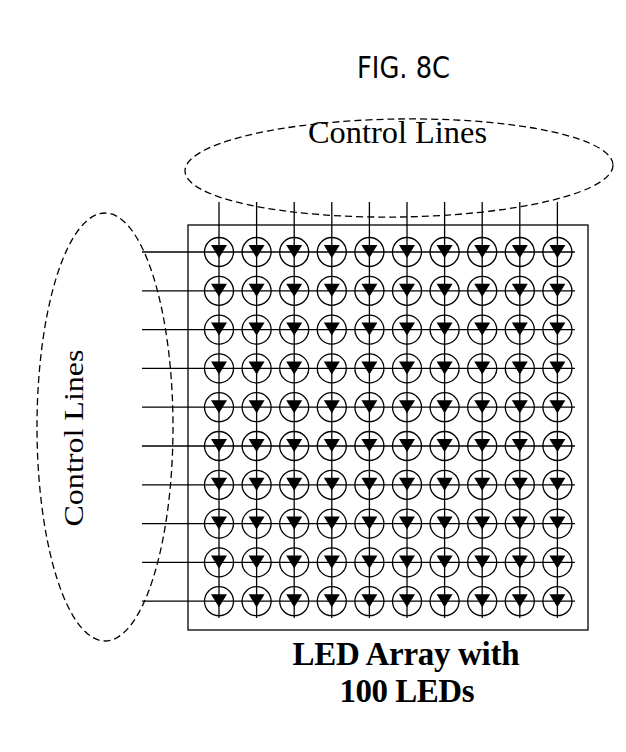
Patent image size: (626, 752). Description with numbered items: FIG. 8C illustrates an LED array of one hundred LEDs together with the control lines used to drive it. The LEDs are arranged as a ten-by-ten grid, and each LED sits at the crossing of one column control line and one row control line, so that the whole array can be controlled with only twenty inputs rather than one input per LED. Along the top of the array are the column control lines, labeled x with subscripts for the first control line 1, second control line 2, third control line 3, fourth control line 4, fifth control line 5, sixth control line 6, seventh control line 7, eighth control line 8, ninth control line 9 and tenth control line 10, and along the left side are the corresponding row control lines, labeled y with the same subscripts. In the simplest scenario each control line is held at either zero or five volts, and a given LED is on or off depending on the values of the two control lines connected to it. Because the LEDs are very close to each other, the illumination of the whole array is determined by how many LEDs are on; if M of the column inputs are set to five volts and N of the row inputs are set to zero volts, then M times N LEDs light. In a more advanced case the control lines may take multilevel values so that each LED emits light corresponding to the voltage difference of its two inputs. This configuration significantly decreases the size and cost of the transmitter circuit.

The control line x1 / y1 1 is at (344, 394).
The control line x2 / y2 2 is at (344, 394).
The control line x3 / y3 3 is at (344, 394).
The control line x4 / y4 4 is at (344, 394).
The control line x5 / y5 5 is at (344, 394).
The control line x6 / y6 6 is at (344, 394).
The control line x7 / y7 7 is at (344, 394).
The control line x8 / y8 8 is at (344, 394).
The control line x9 / y9 9 is at (344, 394).
The control line x10 / y10 10 is at (344, 394).